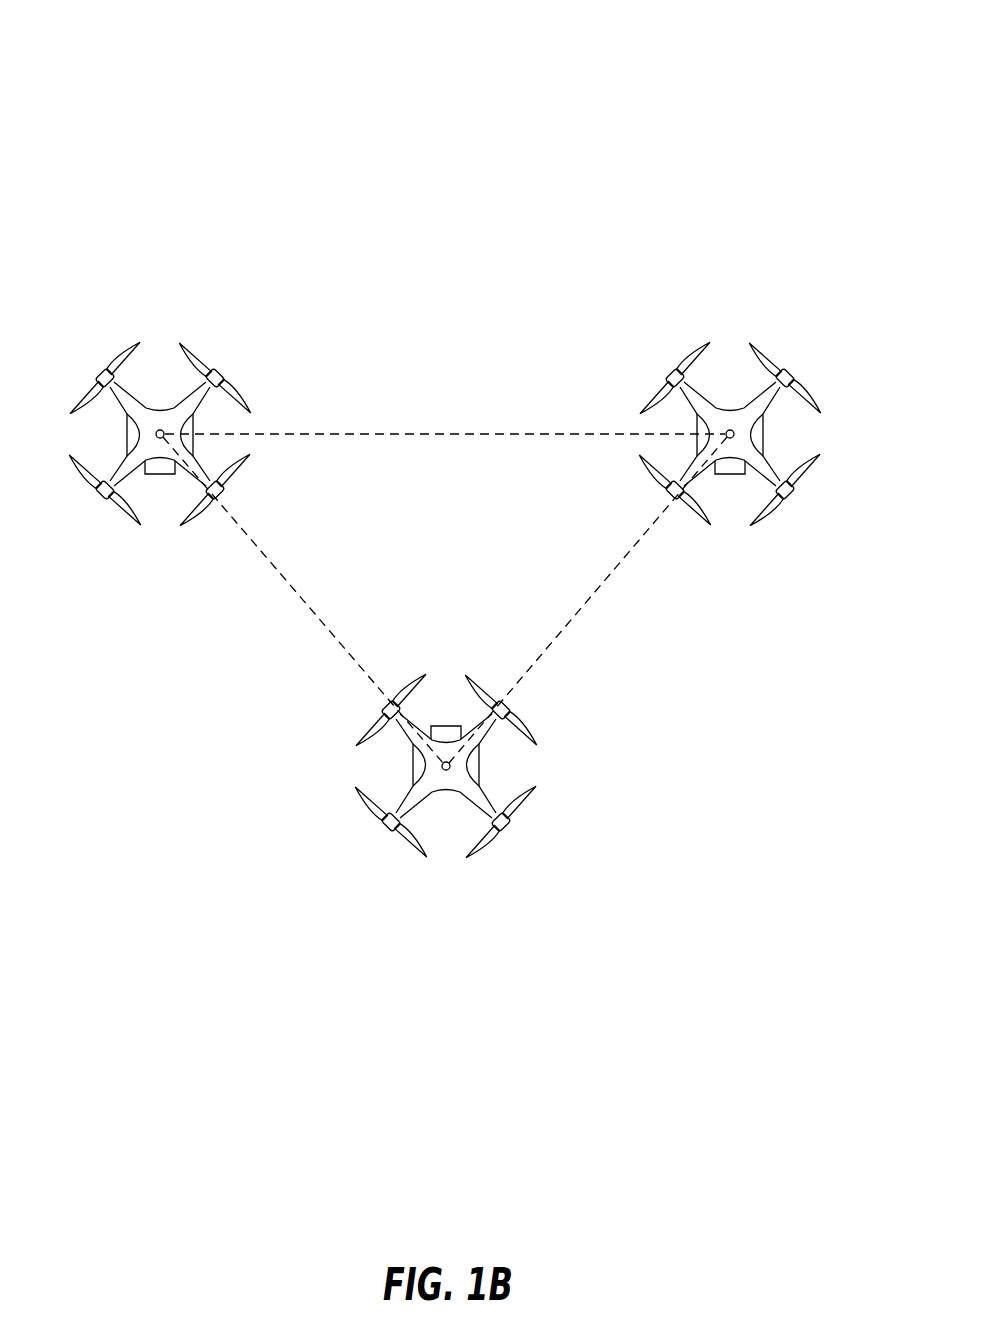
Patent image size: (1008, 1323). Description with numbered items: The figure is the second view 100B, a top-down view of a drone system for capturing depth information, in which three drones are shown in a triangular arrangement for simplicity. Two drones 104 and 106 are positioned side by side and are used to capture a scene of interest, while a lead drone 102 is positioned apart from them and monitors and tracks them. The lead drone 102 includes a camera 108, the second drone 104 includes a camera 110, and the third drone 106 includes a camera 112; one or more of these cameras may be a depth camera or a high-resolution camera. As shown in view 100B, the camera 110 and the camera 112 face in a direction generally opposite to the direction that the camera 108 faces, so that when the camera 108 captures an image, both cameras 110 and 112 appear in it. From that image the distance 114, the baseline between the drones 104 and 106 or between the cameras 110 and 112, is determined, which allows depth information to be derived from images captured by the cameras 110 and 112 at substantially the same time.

The second view 100B is at (772, 30).
The lead drone 102 is at (499, 750).
The second drone 104 is at (178, 437).
The third drone 106 is at (746, 437).
The camera 108 is at (446, 726).
The camera 110 is at (160, 475).
The camera 112 is at (730, 475).
The distance 114 is at (380, 433).